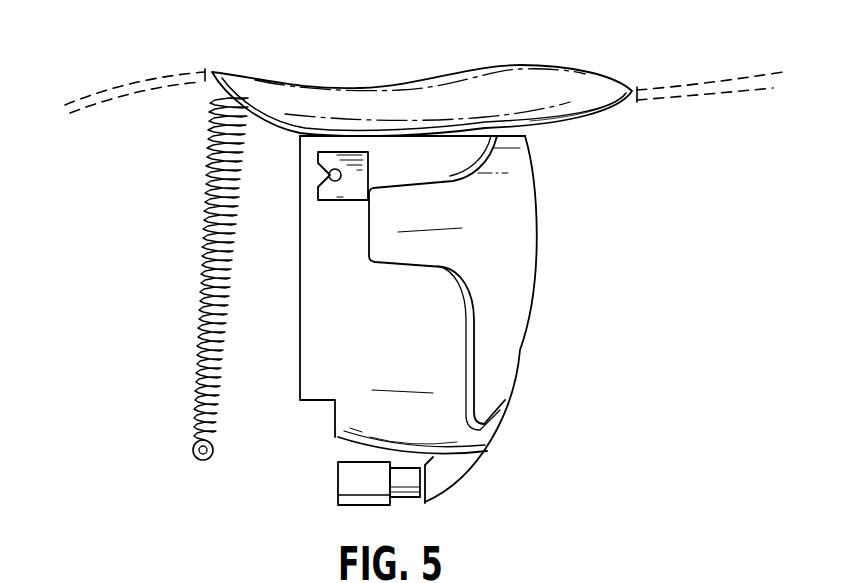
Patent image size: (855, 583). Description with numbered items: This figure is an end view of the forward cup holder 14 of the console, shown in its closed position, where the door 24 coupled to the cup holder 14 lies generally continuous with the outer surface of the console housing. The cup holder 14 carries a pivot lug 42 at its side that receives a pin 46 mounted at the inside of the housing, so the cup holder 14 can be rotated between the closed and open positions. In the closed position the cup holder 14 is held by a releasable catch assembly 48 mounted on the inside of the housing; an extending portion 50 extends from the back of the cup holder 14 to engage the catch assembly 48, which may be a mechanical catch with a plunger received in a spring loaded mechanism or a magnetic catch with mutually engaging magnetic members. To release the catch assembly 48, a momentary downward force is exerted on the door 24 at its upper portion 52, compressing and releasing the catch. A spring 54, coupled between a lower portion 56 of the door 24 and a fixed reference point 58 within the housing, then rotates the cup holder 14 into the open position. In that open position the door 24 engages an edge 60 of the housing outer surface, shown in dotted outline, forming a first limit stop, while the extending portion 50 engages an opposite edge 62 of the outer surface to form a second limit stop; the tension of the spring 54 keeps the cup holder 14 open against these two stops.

The cup holder 14 is at (510, 397).
The door 24 is at (397, 82).
The pivot lug 42 is at (345, 200).
The pin 46 is at (329, 174).
The releasable catch assembly 48 is at (353, 477).
The extending portion 50 is at (447, 480).
The upper portion 52 is at (580, 88).
The spring 54 is at (200, 322).
The lower portion 56 is at (242, 83).
The fixed reference point 58 is at (197, 460).
The edge 60 is at (128, 78).
The opposite edge 62 is at (694, 82).